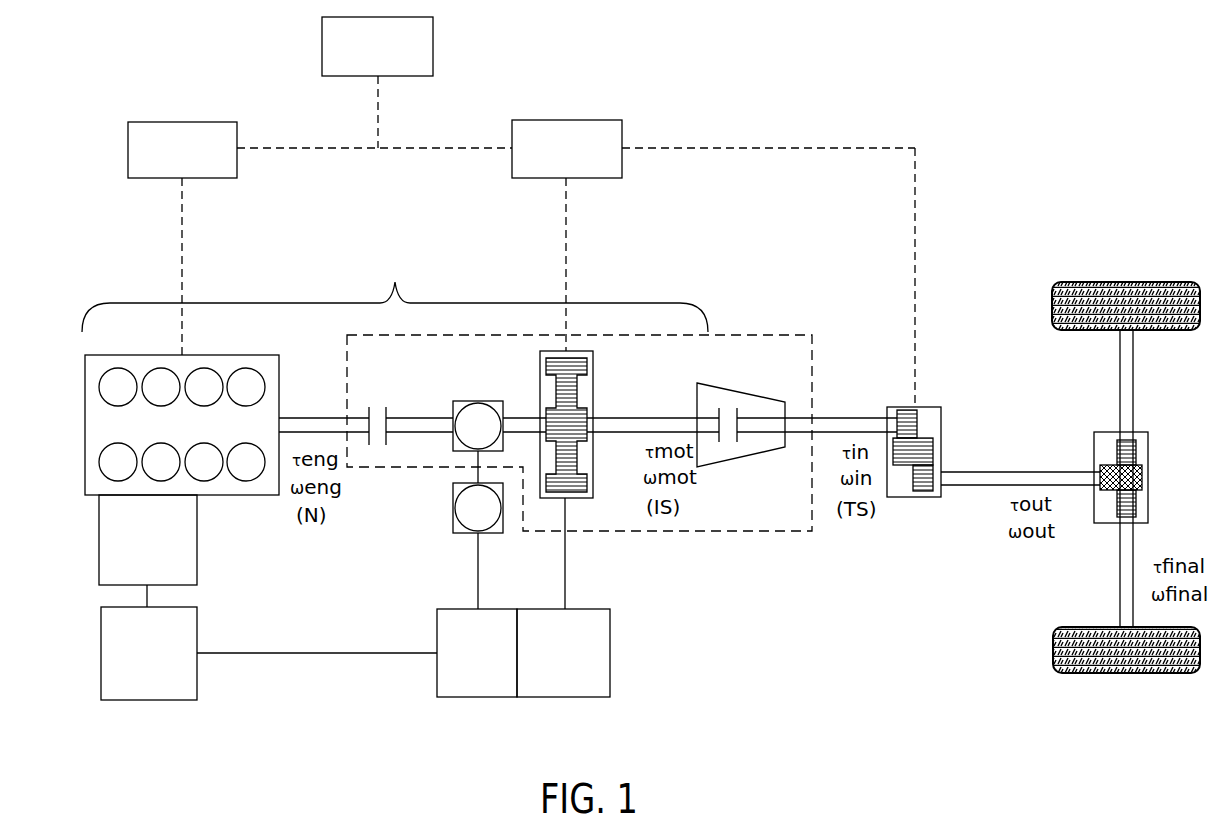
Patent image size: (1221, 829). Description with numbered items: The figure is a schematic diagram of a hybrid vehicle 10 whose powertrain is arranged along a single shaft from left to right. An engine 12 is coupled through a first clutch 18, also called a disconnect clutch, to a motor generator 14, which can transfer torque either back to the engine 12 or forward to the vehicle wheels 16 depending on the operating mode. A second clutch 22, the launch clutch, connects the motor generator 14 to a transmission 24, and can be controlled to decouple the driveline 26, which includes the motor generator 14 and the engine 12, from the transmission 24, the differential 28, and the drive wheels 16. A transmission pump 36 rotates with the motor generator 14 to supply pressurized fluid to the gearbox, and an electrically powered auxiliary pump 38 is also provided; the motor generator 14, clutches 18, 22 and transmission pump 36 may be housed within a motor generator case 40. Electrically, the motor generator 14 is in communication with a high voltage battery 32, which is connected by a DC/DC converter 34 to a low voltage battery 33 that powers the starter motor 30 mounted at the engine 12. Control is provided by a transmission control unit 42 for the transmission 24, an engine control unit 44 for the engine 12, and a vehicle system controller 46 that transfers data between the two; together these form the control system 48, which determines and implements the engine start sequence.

The hybrid vehicle 10 is at (966, 121).
The engine 12 is at (105, 427).
The motor generator (M/G) 14 is at (593, 395).
The vehicle wheels 16 is at (1128, 282).
The first clutch (disconnect clutch) 18 is at (378, 418).
The second clutch (launch clutch) 22 is at (727, 415).
The transmission 24 is at (941, 413).
The driveline 26 is at (395, 289).
The differential 28 is at (1142, 432).
The starter motor 30 is at (99, 545).
The battery (high voltage battery) 32 is at (595, 609).
The low voltage battery 33 is at (101, 655).
The DC/DC converter 34 is at (437, 620).
The transmission pump 36 is at (470, 402).
The auxiliary pump 38 is at (453, 514).
The motor generator case 40 is at (732, 535).
The transmission control unit (TCU) 42 is at (512, 130).
The engine control unit (ECU) 44 is at (237, 130).
The vehicle system controller (VSC) 46 is at (433, 47).
The control system 48 is at (606, 78).